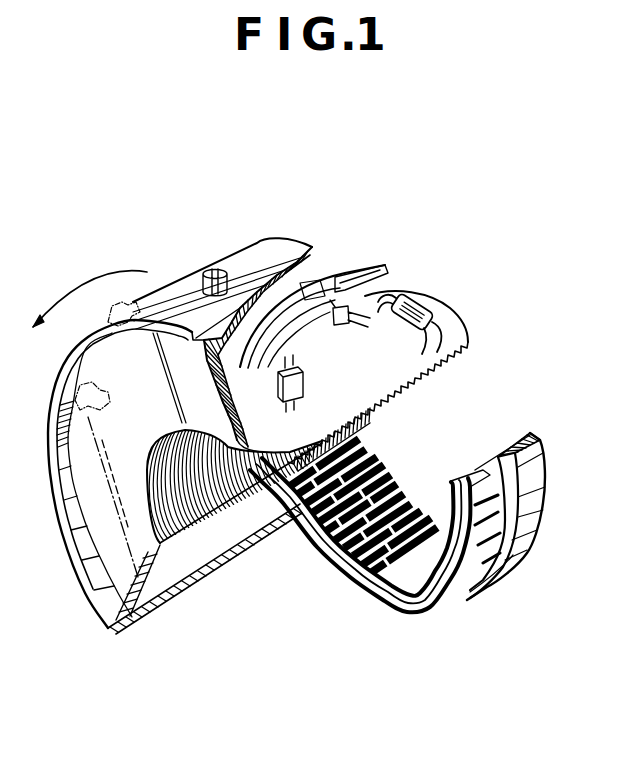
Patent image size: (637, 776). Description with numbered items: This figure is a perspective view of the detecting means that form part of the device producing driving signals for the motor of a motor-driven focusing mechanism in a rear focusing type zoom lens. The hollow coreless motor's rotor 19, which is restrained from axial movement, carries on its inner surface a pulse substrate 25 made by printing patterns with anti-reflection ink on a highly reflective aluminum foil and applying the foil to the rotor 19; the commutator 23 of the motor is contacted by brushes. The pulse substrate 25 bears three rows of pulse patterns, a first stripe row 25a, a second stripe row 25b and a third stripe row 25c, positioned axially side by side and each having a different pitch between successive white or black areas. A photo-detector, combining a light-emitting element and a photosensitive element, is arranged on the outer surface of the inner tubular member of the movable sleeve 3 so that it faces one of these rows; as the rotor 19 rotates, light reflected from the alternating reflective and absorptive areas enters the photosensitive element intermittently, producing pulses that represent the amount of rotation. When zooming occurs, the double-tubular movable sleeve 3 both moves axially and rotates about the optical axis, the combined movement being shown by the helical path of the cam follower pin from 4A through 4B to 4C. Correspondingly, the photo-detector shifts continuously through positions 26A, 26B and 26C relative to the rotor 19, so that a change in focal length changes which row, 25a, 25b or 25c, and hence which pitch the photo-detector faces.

The movable sleeve 3 is at (283, 242).
The first position of cam follower pin 4A is at (211, 270).
The second position of cam follower pin 4B is at (113, 315).
The third position of cam follower pin 4C is at (103, 403).
The rotor 19 is at (533, 458).
The commutator 23 is at (480, 565).
The pulse substrate 25 is at (392, 482).
The first stripe row 25a is at (397, 487).
The second stripe row 25b is at (357, 585).
The third stripe row 25c is at (312, 563).
The first position of photo-detector 26A is at (422, 300).
The second position of photo-detector 26B is at (320, 327).
The third position of photo-detector 26C is at (306, 368).